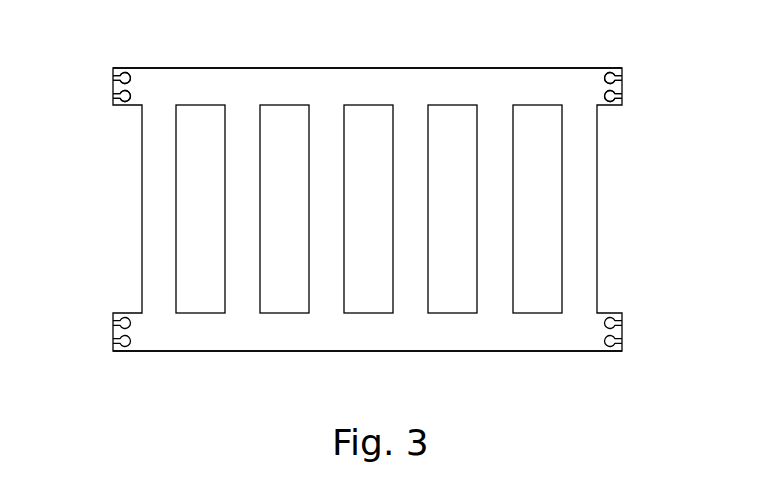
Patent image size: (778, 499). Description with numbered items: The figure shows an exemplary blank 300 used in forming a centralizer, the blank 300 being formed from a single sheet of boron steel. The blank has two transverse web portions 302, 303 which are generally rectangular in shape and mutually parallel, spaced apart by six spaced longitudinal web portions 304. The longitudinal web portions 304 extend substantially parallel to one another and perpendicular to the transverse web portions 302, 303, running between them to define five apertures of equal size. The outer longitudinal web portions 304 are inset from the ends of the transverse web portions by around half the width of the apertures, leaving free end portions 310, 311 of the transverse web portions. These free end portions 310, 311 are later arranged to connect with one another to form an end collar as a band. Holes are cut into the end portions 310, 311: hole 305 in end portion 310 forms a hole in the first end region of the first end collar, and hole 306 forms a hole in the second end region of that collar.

The blank 300 is at (126, 159).
The first transverse web portion 302 is at (378, 80).
The second transverse web portion 303 is at (373, 338).
The longitudinal web portions 304 is at (150, 200).
The hole 305 is at (118, 70).
The hole 306 is at (611, 72).
The free end portion 310 is at (620, 86).
The free end portion 311 is at (115, 87).